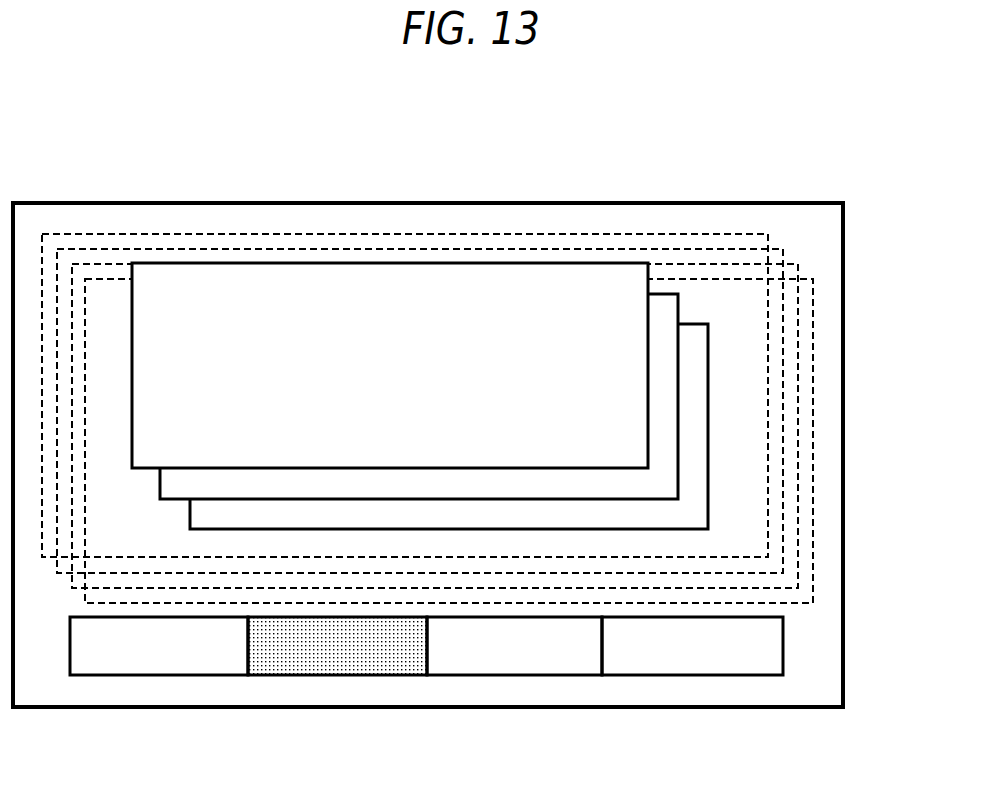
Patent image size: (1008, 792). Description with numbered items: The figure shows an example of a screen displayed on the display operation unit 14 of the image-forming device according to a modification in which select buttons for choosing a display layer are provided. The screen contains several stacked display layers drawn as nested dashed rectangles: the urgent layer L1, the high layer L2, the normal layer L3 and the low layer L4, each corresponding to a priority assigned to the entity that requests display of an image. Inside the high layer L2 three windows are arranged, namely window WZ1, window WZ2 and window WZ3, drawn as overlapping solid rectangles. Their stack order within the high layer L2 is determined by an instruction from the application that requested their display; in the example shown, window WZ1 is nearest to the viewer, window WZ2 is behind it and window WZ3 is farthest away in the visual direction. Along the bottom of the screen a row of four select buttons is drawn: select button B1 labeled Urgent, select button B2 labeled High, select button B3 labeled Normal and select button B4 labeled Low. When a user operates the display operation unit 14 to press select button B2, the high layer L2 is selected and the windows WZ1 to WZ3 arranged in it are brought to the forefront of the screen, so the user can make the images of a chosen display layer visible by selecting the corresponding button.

The display operation unit 14 is at (430, 202).
The urgent layer L1 is at (772, 263).
The high layer L2 is at (755, 242).
The normal layer L3 is at (790, 305).
The low layer L4 is at (805, 345).
The window WZ1 is at (132, 327).
The window WZ2 is at (160, 485).
The window WZ3 is at (190, 518).
The select button B1 is at (147, 677).
The select button B2 is at (320, 677).
The select button B3 is at (458, 677).
The select button B4 is at (630, 677).